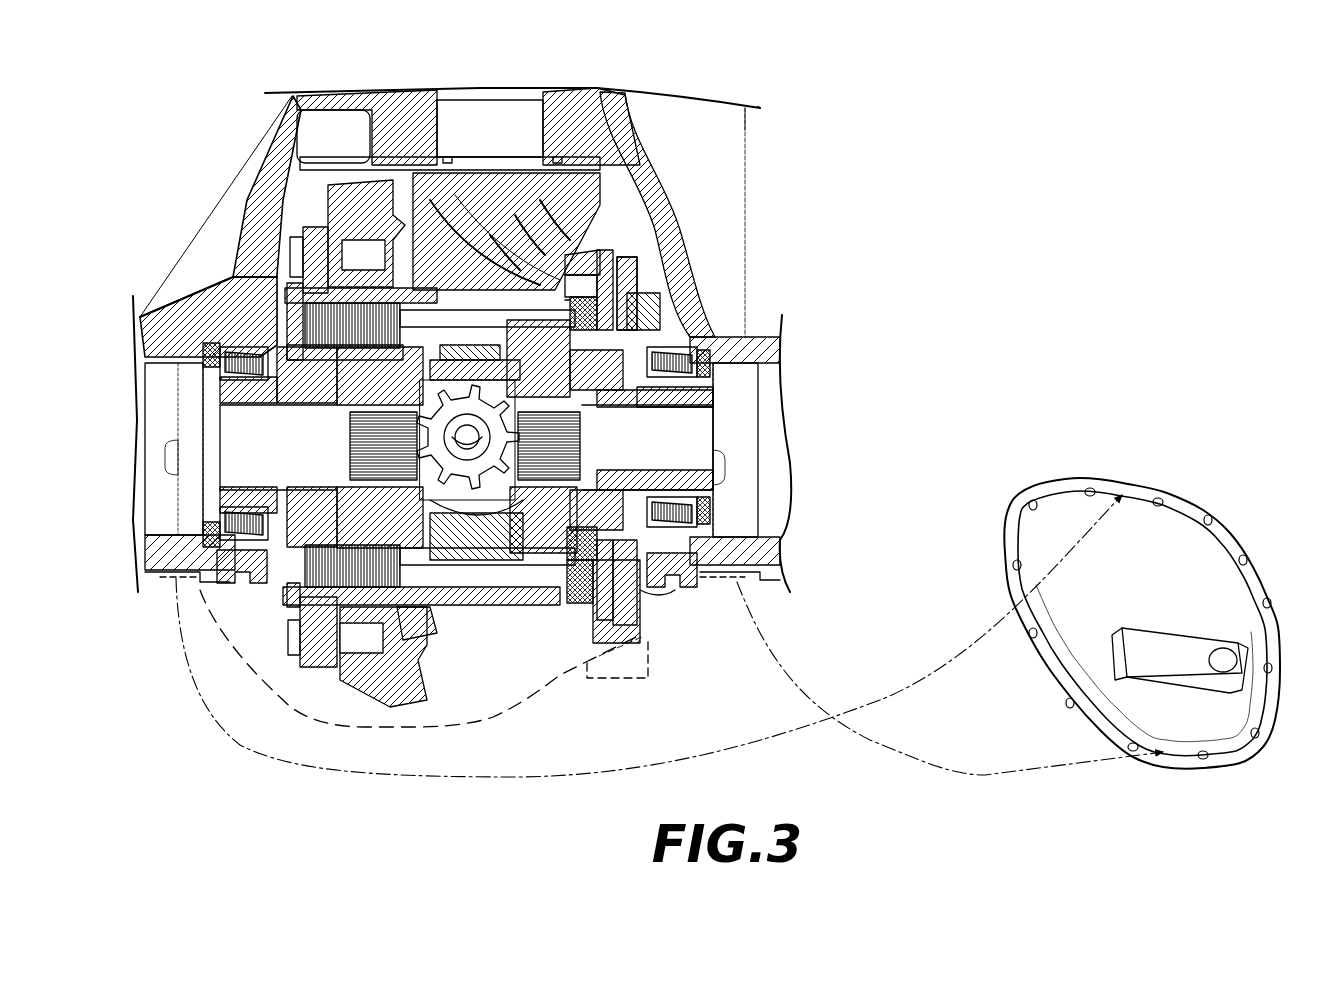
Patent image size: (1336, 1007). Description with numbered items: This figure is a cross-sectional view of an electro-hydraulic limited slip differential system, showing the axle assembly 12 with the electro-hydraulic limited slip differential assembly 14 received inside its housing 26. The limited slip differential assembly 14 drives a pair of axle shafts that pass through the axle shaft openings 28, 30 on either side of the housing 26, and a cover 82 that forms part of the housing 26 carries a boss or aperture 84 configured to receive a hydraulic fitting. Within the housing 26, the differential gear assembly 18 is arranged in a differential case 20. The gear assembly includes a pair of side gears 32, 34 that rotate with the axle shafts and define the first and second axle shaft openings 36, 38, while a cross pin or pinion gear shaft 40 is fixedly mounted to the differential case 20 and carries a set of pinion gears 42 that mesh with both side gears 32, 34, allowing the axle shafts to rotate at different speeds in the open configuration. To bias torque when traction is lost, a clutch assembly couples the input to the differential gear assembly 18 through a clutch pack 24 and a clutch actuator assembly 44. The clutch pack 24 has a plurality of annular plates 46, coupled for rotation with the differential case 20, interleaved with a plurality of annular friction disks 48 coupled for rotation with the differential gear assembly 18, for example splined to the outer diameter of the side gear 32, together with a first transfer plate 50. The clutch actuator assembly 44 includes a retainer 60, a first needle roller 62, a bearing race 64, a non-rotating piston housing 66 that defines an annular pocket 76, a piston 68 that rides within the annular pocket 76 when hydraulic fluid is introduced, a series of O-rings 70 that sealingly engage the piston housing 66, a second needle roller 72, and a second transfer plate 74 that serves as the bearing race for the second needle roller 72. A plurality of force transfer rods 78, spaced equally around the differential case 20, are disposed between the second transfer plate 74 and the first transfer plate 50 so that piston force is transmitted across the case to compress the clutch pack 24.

The axle assembly 12 is at (780, 165).
The electro-hydraulic limited slip differential assembly 14 is at (487, 628).
The differential gear assembly 18 is at (463, 568).
The differential case 20 is at (320, 672).
The clutch pack 24 is at (337, 594).
The housing 26 is at (252, 220).
The axle shaft opening 28 is at (140, 503).
The axle shaft opening 30 is at (773, 398).
The side gear 32 is at (360, 507).
The side gear 34 is at (505, 548).
The first axle shaft opening 36 is at (353, 443).
The second axle shaft opening 38 is at (582, 443).
The pinion gear shaft 40 is at (467, 435).
The pinion gear 42 is at (485, 390).
The clutch actuator assembly 44 is at (627, 227).
The annular plate 46 is at (310, 572).
The annular friction disk 48 is at (323, 323).
The first transfer plate 50 is at (397, 627).
The retainer 60 is at (678, 612).
The first needle roller 62 is at (617, 293).
The bearing race 64 is at (617, 293).
The piston housing 66 is at (632, 272).
The piston 68 is at (585, 300).
The O-ring 70 is at (585, 275).
The second needle roller 72 is at (595, 270).
The second transfer plate 74 is at (585, 630).
The annular pocket 76 is at (607, 345).
The force transfer rod 78 is at (423, 320).
The cover 82 is at (1213, 553).
The aperture 84 is at (1225, 660).